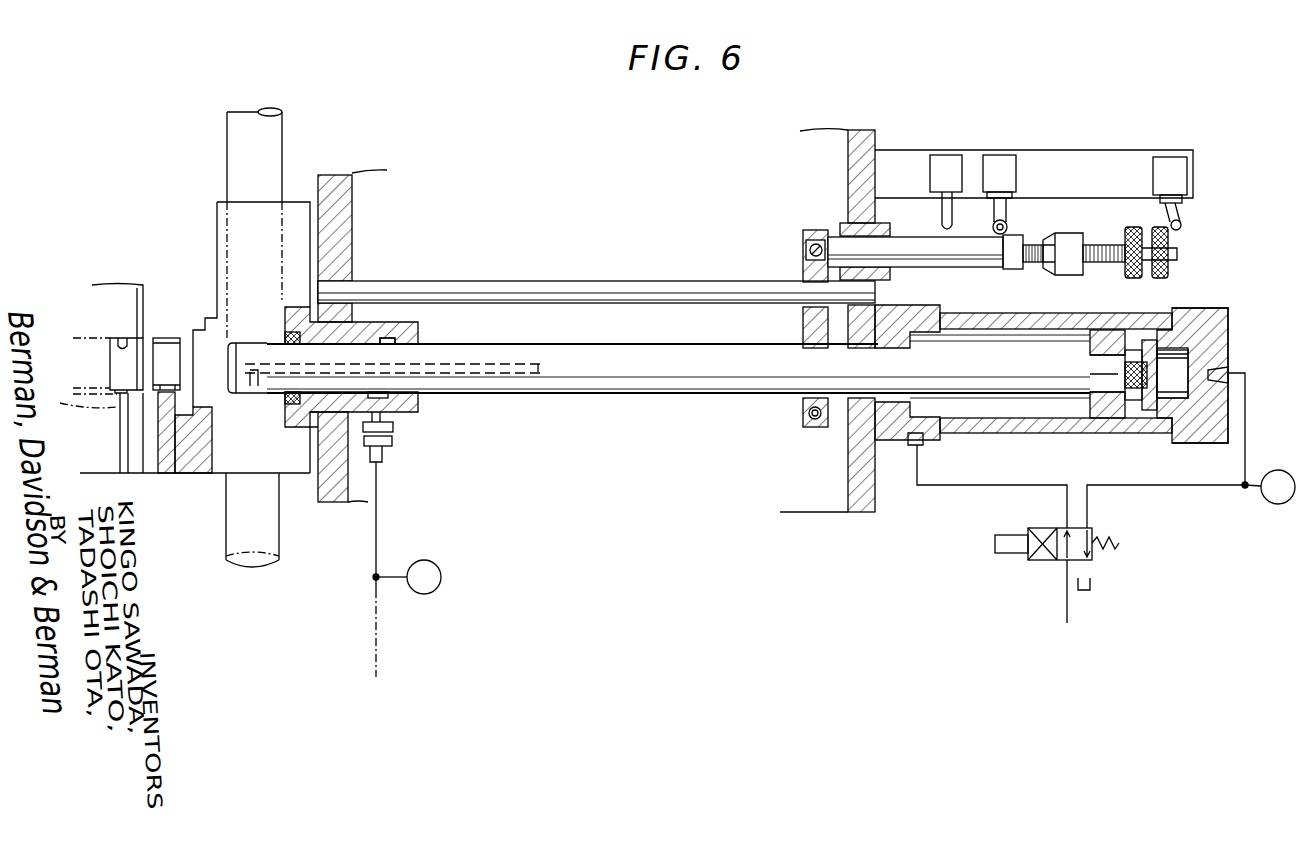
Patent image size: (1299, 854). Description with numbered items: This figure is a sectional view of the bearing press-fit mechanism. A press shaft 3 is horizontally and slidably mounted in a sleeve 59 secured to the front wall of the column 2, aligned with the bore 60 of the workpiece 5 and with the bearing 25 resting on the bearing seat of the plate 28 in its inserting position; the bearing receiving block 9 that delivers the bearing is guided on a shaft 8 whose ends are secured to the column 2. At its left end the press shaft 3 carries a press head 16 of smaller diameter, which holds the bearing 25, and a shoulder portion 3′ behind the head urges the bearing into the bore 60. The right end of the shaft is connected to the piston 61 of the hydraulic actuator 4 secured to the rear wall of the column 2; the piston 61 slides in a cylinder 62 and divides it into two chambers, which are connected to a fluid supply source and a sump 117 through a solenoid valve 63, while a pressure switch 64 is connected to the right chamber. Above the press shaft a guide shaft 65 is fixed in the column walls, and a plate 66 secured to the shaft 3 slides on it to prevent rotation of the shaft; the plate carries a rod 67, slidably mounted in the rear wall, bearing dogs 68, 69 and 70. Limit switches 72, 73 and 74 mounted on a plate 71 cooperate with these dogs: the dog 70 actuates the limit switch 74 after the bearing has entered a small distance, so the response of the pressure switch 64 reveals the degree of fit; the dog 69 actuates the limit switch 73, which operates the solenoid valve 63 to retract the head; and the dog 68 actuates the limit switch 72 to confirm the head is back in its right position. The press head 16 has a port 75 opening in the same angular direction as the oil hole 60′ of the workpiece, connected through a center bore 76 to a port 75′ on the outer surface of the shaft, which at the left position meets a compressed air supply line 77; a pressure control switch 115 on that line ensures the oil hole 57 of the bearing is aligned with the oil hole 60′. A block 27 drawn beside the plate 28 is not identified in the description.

The column 2 is at (858, 128).
The press shaft 3 is at (572, 385).
The shoulder portion 3′ is at (263, 342).
The hydraulic actuator 4 is at (1145, 313).
The workpiece 5 is at (83, 303).
The shaft 8 is at (268, 125).
The bearing receiving block 9 is at (300, 130).
The press head 16 is at (246, 392).
The bearing 25 is at (160, 337).
The base block 27 is at (195, 455).
The plate 28 is at (157, 460).
The oil hole 57 is at (157, 410).
The sleeve 59 is at (333, 507).
The bore 60 is at (119, 337).
The oil hole 60′ is at (73, 394).
The piston 61 is at (1110, 420).
The cylinder 62 is at (987, 418).
The solenoid valve 63 is at (1025, 560).
The pressure switch 64 is at (1273, 504).
The guide shaft 65 is at (558, 280).
The plate 66 is at (803, 330).
The rod 67 is at (912, 240).
The dog 68 is at (1158, 230).
The dog 69 is at (1133, 230).
The dog 70 is at (1070, 236).
The plate 71 is at (1043, 160).
The limit switch 72 is at (1175, 165).
The limit switch 73 is at (1000, 160).
The limit switch 74 is at (946, 160).
The port 75 is at (292, 480).
The port 75′ is at (517, 400).
The center bore 76 is at (432, 402).
The compressed air supply line 77 is at (385, 462).
The pressure control switch 115 is at (440, 593).
The sump 117 is at (1090, 582).